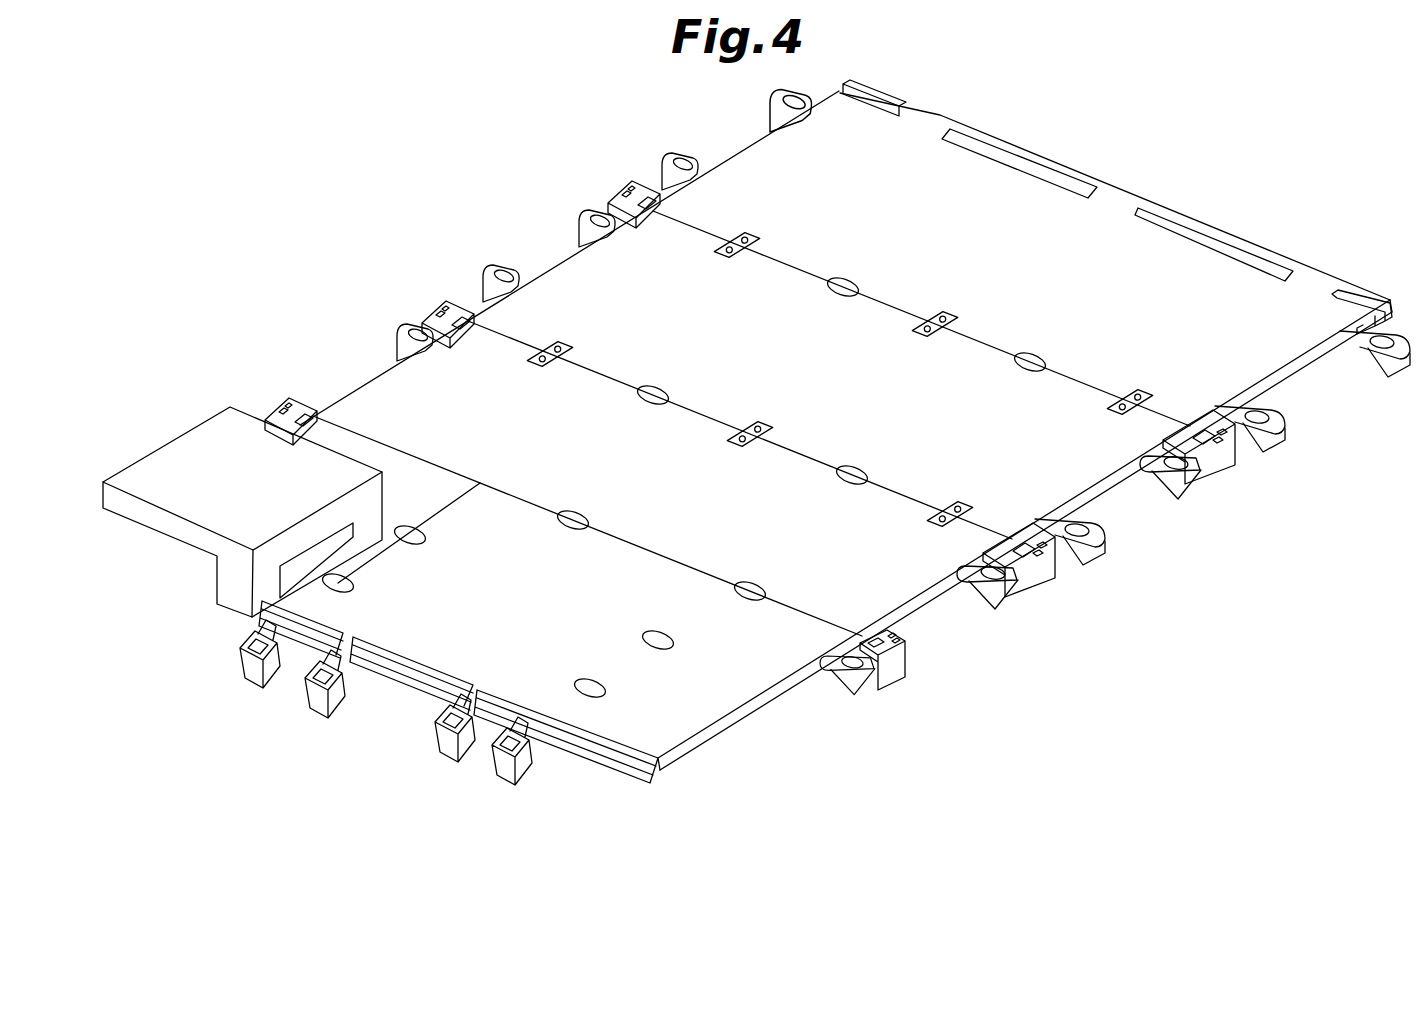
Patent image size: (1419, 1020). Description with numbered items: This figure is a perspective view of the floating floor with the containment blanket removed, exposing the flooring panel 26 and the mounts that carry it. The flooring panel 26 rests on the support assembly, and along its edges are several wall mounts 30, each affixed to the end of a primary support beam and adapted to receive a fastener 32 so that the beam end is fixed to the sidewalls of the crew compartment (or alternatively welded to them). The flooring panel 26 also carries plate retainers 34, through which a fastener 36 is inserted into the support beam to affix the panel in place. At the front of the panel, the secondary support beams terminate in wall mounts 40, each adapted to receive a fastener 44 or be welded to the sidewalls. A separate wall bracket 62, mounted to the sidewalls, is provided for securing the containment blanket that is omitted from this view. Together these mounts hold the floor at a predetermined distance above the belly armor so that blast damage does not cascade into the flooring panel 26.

The flooring panel 26 is at (817, 215).
The wall mount 30 is at (887, 670).
The fastener 32 is at (902, 643).
The plate retainer 34 is at (596, 690).
The fastener 36 is at (588, 690).
The wall mount 40 is at (260, 675).
The fastener 44 is at (333, 690).
The wall bracket 62 is at (1100, 523).